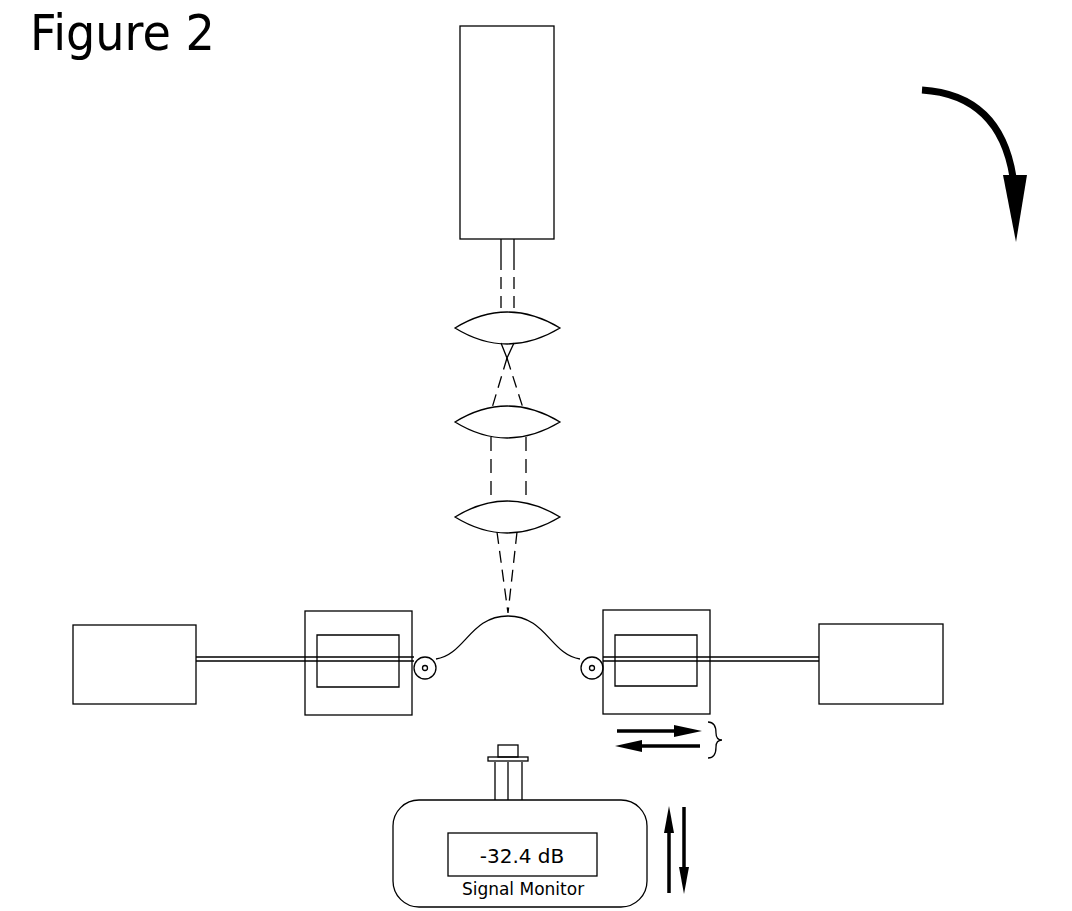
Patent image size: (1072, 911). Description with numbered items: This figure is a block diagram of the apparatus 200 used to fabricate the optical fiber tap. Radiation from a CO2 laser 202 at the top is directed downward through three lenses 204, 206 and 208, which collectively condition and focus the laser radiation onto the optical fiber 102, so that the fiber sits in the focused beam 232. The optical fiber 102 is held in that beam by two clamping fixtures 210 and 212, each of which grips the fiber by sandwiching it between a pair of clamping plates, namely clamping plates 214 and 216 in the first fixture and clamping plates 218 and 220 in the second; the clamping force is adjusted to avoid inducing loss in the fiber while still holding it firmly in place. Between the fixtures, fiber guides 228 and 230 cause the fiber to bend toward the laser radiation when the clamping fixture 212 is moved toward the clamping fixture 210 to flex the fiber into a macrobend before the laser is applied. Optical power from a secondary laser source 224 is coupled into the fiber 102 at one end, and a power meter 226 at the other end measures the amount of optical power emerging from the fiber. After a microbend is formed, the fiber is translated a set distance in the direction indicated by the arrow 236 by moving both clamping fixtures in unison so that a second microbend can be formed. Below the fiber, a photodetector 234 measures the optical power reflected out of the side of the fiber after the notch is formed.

The apparatus 200 is at (924, 156).
The CO2 laser 202 is at (468, 125).
The lens 204 is at (553, 323).
The lens 206 is at (555, 418).
The lens 208 is at (552, 516).
The focused beam 232 is at (512, 574).
The secondary laser source 224 is at (127, 622).
The optical fiber 102 is at (257, 655).
The clamping fixture 210 is at (305, 705).
The clamping plate 214 is at (348, 648).
The clamping plate 216 is at (350, 679).
The fiber guide 228 is at (431, 677).
The fiber guide 230 is at (584, 675).
The clamping fixture 212 is at (710, 712).
The clamping plate 218 is at (655, 645).
The clamping plate 220 is at (700, 681).
The arrow 236 is at (725, 738).
The power meter 226 is at (900, 624).
The photodetector 234 is at (498, 751).